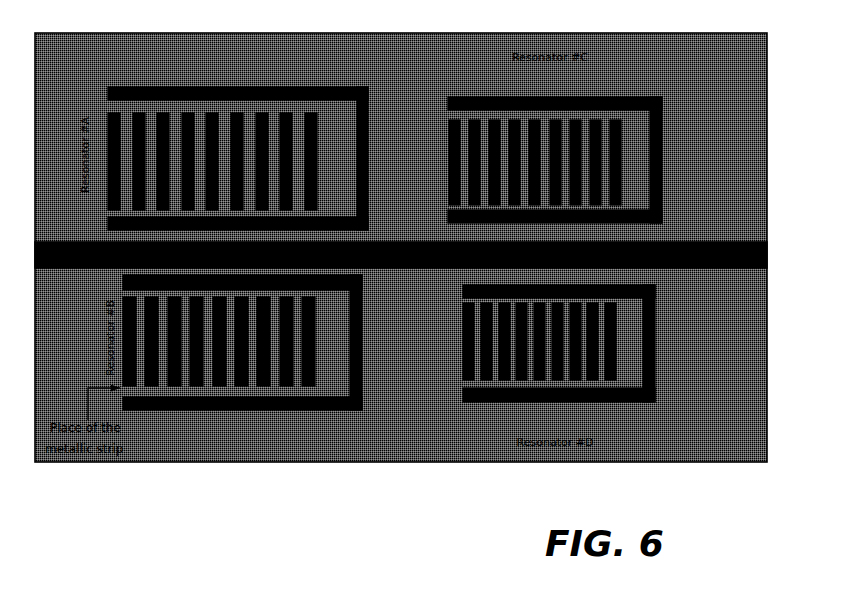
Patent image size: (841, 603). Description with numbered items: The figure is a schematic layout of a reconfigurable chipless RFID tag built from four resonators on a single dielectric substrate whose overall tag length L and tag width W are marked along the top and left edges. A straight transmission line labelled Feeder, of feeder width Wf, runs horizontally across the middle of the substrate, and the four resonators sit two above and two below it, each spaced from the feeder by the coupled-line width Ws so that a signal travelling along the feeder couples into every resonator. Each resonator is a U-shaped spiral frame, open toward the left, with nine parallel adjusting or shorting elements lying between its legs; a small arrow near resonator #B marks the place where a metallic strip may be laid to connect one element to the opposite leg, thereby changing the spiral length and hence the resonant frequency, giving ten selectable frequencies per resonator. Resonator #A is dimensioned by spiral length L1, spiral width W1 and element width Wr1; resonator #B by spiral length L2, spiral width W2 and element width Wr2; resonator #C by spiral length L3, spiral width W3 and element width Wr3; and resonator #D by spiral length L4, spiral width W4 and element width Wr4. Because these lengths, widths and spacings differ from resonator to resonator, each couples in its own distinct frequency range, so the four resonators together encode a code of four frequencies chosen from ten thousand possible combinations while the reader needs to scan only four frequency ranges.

The length of the tag L is at (40, 27).
The width of the tag W is at (25, 40).
The feeder width Wf is at (58, 243).
The width of the coupled line Ws is at (97, 242).
The length of the spiral resonator L1 is at (368, 75).
The width of the spiral resonator W1 is at (383, 90).
The width of each element Wr1 is at (226, 161).
The length of the spiral resonator L2 is at (360, 417).
The width of the spiral resonator W2 is at (368, 280).
The width of each element Wr2 is at (232, 341).
The length of the spiral resonator L3 is at (658, 88).
The width of the spiral resonator W3 is at (673, 222).
The width of each element Wr3 is at (544, 166).
The length of the spiral resonator L4 is at (650, 410).
The width of the spiral resonator W4 is at (662, 290).
The width of each element Wr4 is at (551, 341).